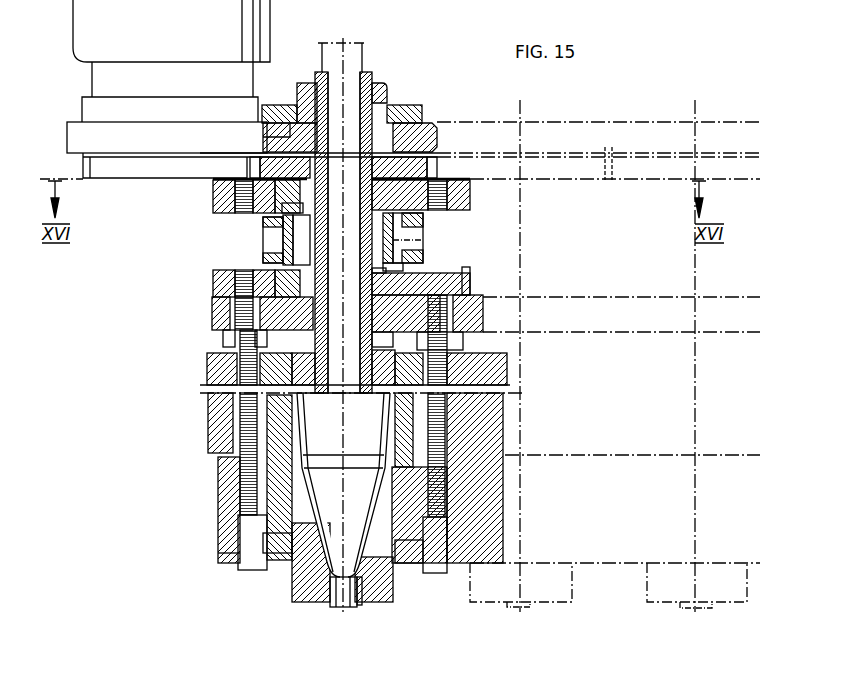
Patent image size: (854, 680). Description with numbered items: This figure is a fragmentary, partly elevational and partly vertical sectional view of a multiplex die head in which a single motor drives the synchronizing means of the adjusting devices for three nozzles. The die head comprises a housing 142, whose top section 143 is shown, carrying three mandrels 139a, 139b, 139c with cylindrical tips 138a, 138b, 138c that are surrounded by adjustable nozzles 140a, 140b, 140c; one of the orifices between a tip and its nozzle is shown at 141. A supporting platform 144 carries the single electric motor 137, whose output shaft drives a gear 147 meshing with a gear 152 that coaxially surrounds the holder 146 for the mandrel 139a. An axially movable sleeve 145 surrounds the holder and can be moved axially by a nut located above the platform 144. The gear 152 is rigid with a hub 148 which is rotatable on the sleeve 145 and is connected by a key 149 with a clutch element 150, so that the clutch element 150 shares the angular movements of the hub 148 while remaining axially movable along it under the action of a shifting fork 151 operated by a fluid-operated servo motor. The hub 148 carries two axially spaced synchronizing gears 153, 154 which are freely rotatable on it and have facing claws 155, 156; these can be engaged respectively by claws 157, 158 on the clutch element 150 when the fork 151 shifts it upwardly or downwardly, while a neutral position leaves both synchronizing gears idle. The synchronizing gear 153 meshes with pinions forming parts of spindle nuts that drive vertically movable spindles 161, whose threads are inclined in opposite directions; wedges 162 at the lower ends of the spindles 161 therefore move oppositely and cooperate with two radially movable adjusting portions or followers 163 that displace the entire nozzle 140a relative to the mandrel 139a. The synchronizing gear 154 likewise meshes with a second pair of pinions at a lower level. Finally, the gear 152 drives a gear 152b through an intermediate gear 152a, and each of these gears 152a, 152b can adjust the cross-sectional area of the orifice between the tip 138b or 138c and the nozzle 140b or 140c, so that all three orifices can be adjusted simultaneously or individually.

The electric motor 137 is at (227, 31).
The supporting platform 144 is at (112, 140).
The gear 147 is at (155, 165).
The holder 146 is at (352, 50).
The axially movable sleeve 145 is at (363, 72).
The synchronizing gear 153 is at (387, 103).
The gear 152 is at (420, 145).
The gear 152a is at (553, 167).
The gear 152b is at (653, 167).
The key 149 is at (283, 262).
The shifting fork 151 is at (303, 257).
The claws 157 is at (263, 220).
The claws 156 is at (280, 268).
The top section of the housing 143 is at (212, 318).
The claws 155 is at (470, 205).
The clutch element 150 is at (423, 252).
The claws 158 is at (402, 268).
The hub 148 is at (405, 267).
The synchronizing gear 154 is at (470, 279).
The housing 142 is at (207, 430).
The spindles 161 is at (243, 472).
The wedges 162 is at (247, 533).
The adjusting portions or followers 163 is at (273, 538).
The adjustable nozzle 140a is at (293, 582).
The mandrel 139a is at (362, 446).
The cylindrical tip 138a is at (338, 607).
The orifice 141 is at (360, 605).
The mandrel 139b is at (522, 480).
The mandrel 139c is at (697, 527).
The adjustable nozzle 140b is at (488, 590).
The adjustable nozzle 140c is at (657, 583).
The cylindrical tip 138b is at (530, 607).
The cylindrical tip 138c is at (693, 608).